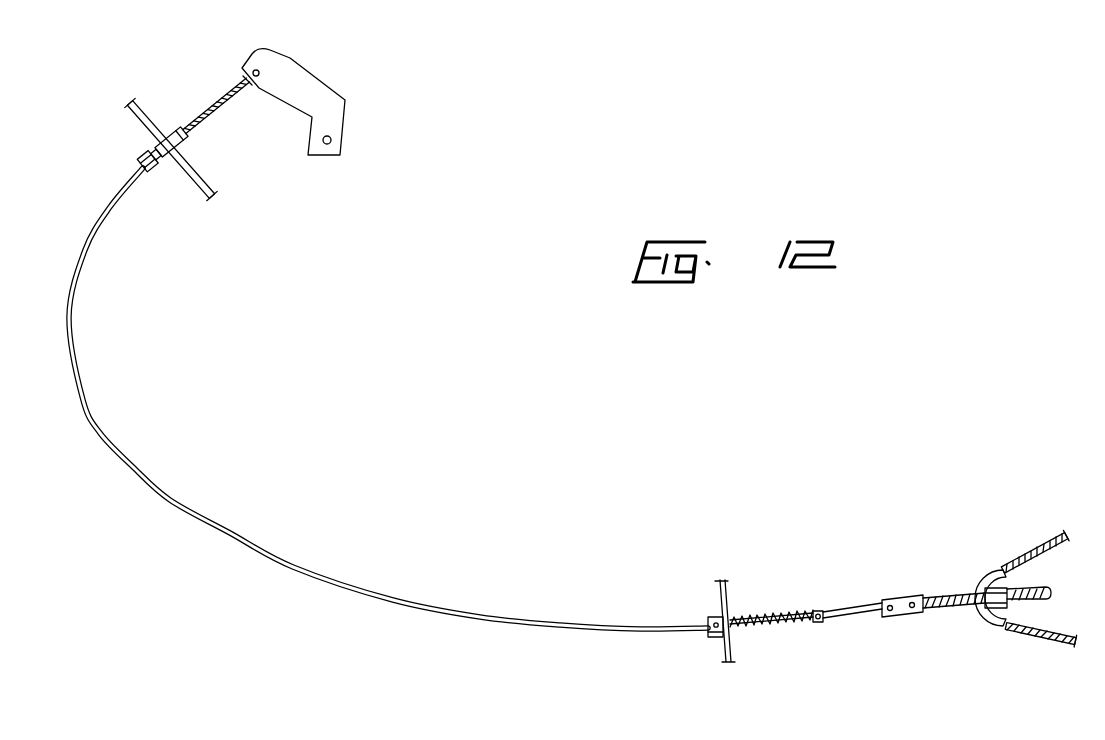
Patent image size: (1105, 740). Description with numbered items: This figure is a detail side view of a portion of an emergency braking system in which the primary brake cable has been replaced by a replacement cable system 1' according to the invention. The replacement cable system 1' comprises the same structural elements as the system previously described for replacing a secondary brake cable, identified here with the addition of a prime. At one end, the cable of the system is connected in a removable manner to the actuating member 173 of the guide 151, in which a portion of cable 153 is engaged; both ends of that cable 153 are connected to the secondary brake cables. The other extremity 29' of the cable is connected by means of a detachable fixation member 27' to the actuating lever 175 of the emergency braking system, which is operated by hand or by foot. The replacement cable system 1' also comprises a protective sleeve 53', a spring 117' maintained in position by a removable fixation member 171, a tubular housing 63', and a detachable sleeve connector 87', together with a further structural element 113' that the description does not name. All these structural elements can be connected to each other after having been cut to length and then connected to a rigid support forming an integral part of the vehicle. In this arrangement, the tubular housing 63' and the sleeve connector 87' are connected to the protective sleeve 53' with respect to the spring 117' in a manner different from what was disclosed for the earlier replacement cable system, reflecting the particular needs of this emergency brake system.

The replacement cable system 1' is at (388, 398).
The detachable fixation member 27' is at (272, 45).
The extremity of the cable 29' is at (222, 66).
The protective sleeve 53' is at (615, 658).
The tubular housing 63' is at (160, 189).
The detachable sleeve connector 87' is at (710, 675).
The cable end fitting 113' is at (690, 613).
The spring 117' is at (782, 644).
The guide 151 is at (985, 590).
The cable 153 is at (1033, 546).
The removable fixation member 171 is at (822, 619).
The actuating member 173 is at (960, 604).
The actuating lever 175 is at (313, 92).